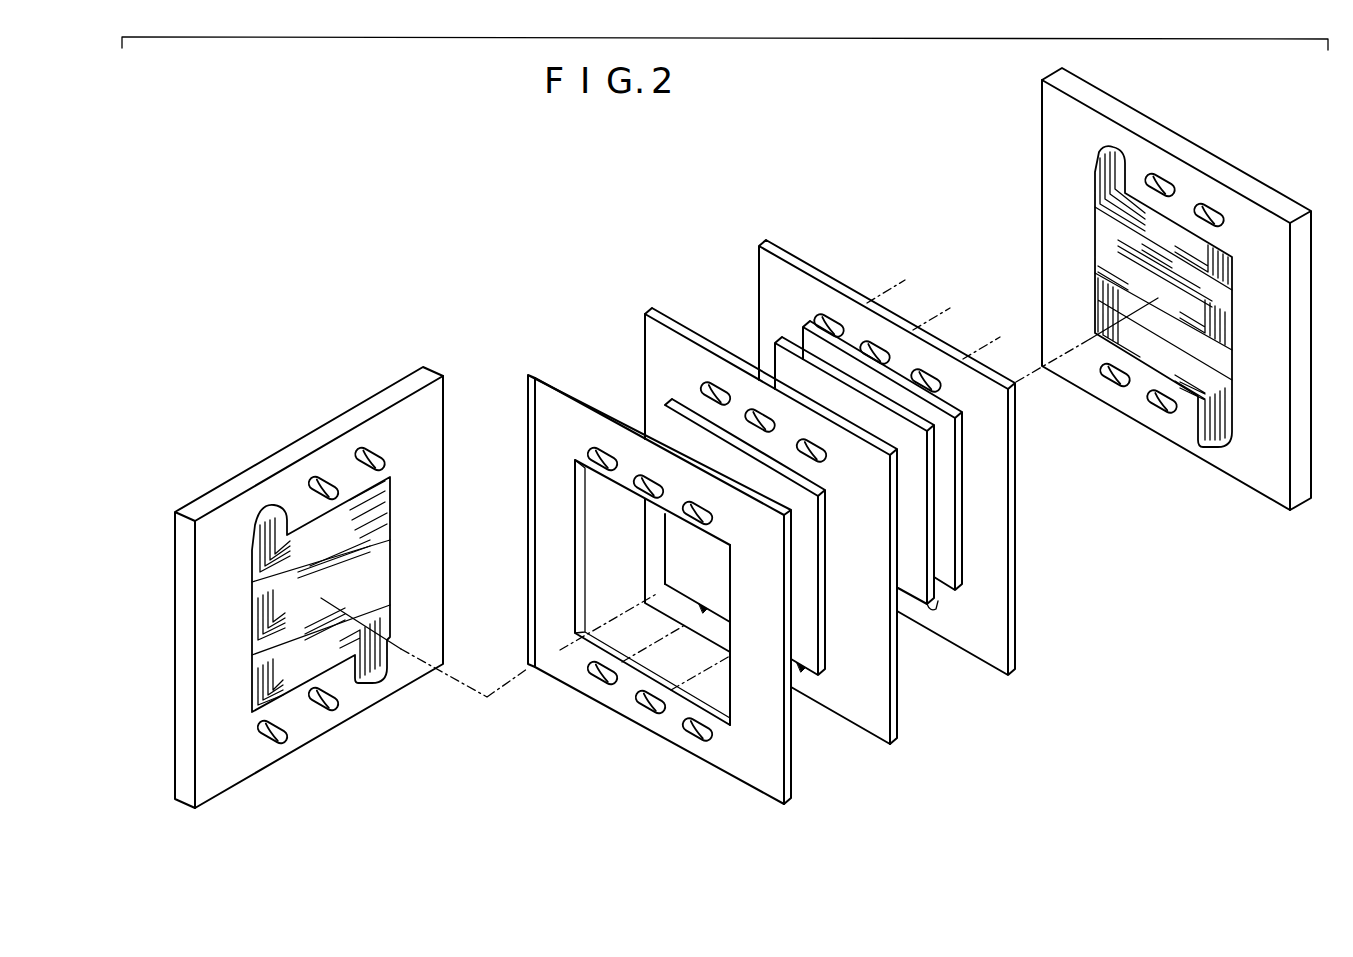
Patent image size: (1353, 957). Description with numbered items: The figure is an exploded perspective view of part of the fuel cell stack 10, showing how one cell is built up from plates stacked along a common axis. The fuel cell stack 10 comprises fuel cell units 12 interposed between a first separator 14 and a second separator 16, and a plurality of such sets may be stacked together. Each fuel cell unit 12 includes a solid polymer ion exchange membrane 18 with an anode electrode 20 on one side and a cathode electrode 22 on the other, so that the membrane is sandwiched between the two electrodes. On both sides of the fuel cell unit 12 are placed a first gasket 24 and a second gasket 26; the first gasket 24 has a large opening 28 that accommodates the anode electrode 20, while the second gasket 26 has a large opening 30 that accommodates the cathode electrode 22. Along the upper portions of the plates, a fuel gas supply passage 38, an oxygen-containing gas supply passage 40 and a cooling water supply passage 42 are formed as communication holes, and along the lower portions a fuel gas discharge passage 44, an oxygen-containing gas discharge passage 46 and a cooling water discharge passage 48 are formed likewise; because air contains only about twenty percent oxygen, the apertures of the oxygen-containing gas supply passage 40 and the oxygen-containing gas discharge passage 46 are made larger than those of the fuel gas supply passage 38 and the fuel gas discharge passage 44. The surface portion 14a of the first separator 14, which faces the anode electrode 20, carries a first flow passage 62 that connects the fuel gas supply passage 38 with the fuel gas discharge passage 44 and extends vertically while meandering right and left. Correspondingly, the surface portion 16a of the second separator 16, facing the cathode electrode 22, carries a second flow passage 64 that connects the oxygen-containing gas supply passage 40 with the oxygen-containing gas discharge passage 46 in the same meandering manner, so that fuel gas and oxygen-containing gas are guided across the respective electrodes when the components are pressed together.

The fuel cell stack 10 is at (812, 127).
The fuel cell unit 12 is at (663, 308).
The first separator 14 is at (398, 381).
The surface portion of the first separator 14a is at (233, 757).
The second separator 16 is at (1122, 107).
The surface portion of the second separator 16a is at (1258, 472).
The solid polymer ion exchange membrane 18 is at (880, 700).
The anode electrode 20 is at (805, 620).
The cathode electrode 22 is at (917, 540).
The first gasket 24 is at (557, 373).
The second gasket 26 is at (788, 247).
The large opening 28 is at (733, 692).
The large opening 30 is at (955, 481).
The fuel gas supply passage 38 is at (665, 538).
The oxygen-containing gas supply passage 40 is at (573, 482).
The cooling water supply passage 42 is at (621, 506).
The fuel gas discharge passage 44 is at (570, 698).
The oxygen-containing gas discharge passage 46 is at (672, 755).
The cooling water discharge passage 48 is at (614, 726).
The first flow passage 62 is at (382, 524).
The second flow passage 64 is at (1224, 300).